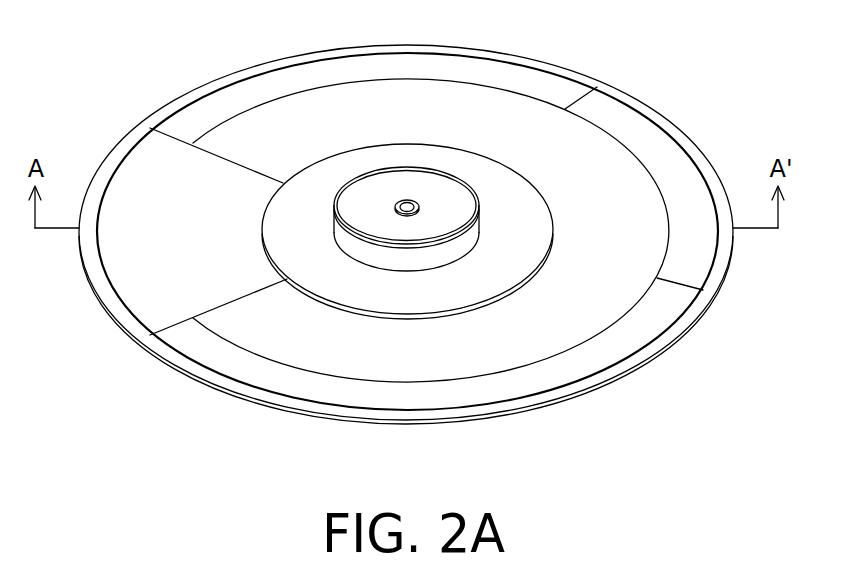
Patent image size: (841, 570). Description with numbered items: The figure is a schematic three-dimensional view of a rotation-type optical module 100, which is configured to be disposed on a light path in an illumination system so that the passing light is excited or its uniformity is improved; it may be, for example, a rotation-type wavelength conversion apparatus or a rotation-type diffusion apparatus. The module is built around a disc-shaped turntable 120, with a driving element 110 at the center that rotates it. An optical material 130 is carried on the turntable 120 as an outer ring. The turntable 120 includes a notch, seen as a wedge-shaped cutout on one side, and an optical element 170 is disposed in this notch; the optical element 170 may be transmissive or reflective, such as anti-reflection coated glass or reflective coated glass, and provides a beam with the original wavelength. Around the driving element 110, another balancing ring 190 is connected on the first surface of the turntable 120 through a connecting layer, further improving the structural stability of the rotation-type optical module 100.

The rotation-type optical module 100 is at (702, 479).
The driving element 110 is at (436, 190).
The turntable 120 is at (577, 308).
The optical material 130 is at (681, 170).
The optical element 170 is at (135, 185).
The balancing ring 190 is at (525, 213).